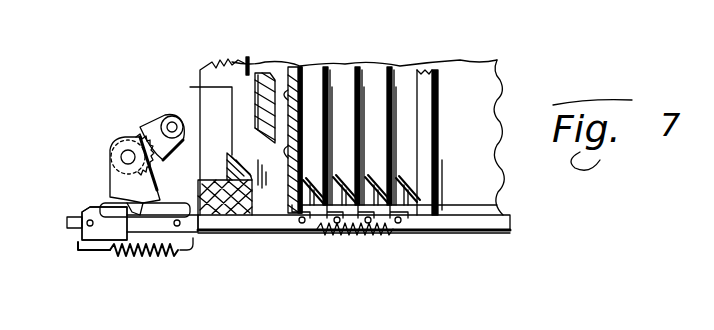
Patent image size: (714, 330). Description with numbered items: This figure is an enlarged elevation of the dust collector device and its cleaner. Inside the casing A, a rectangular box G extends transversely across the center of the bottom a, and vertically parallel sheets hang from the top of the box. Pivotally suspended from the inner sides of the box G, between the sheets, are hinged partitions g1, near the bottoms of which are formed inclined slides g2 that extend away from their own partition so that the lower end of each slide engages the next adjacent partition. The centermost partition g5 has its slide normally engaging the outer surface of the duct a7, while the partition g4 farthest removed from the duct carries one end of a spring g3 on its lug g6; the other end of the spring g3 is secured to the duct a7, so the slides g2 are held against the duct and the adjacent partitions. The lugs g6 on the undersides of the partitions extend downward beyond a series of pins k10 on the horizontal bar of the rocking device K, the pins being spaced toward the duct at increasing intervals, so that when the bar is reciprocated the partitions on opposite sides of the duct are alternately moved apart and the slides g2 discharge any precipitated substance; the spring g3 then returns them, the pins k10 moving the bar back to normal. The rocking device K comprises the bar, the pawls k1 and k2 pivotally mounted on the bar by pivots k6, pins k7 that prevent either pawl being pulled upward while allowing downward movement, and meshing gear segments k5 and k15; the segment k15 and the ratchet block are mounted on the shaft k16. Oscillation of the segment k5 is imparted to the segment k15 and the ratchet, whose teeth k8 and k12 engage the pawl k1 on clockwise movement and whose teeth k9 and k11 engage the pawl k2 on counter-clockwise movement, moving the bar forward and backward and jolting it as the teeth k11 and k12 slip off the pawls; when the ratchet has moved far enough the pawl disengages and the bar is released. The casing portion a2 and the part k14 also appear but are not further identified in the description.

The casing A is at (215, 90).
The casing stub a2 is at (235, 72).
The duct a7 is at (425, 100).
The bottom a is at (232, 233).
The rectangular box G is at (467, 100).
The hinged partitions g1 is at (365, 93).
The inclined slides g2 is at (400, 185).
The spring g3 is at (388, 230).
The partition farthest from duct g4 is at (303, 112).
The centermost partition g5 is at (398, 87).
The lugs g6 is at (293, 227).
The rocking device K is at (110, 205).
The pawl k1 is at (60, 237).
The pawl k2 is at (173, 233).
The gear segment k5 is at (143, 125).
The pivots k6 is at (50, 218).
The pins k7 is at (140, 253).
The ratchet tooth k8 is at (127, 207).
The ratchet tooth k9 is at (117, 176).
The pins k10 is at (305, 230).
The ratchet tooth k11 is at (157, 187).
The ratchet tooth k12 is at (110, 203).
The wheel hub k14 is at (123, 153).
The gear segment k15 is at (110, 143).
The shaft k16 is at (118, 150).